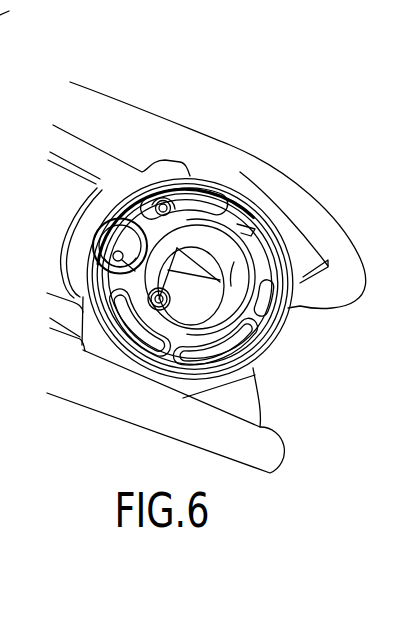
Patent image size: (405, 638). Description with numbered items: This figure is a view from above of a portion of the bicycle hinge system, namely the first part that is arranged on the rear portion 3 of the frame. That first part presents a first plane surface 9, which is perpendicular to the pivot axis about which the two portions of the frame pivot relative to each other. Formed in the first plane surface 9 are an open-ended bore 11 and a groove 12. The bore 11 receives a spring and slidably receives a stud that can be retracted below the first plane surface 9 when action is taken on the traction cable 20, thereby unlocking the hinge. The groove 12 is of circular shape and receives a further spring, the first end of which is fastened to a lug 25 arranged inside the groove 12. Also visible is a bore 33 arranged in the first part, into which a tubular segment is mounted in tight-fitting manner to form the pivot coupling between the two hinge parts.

The rear portion 3 is at (339, 241).
The first plane surface 9 is at (138, 206).
The open-ended bore 11 is at (112, 245).
The groove 12 is at (169, 356).
The traction cable 20 is at (160, 297).
The lug 25 is at (168, 206).
The bore 33 is at (233, 262).